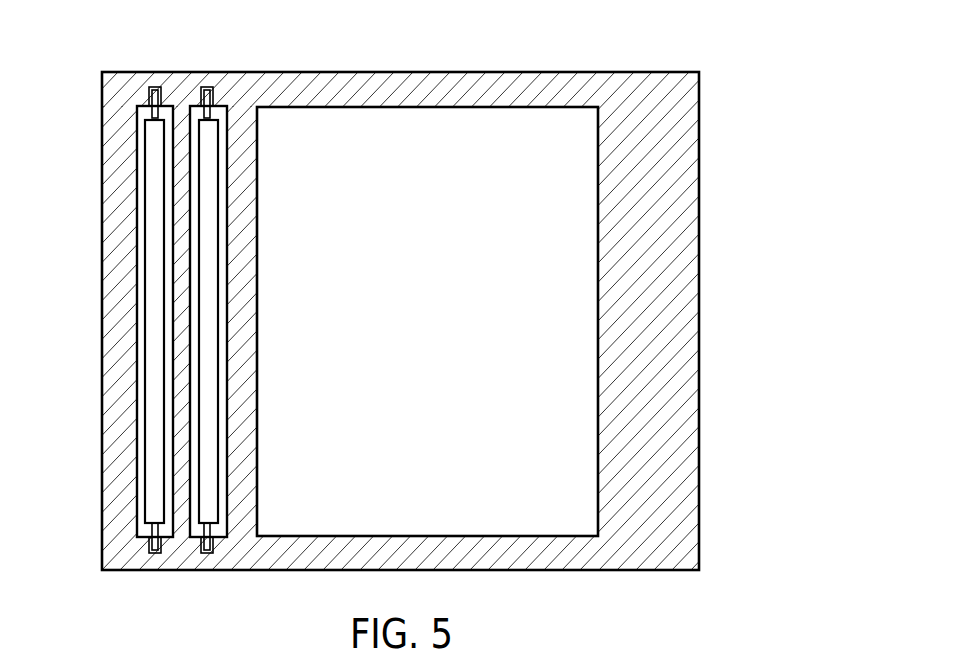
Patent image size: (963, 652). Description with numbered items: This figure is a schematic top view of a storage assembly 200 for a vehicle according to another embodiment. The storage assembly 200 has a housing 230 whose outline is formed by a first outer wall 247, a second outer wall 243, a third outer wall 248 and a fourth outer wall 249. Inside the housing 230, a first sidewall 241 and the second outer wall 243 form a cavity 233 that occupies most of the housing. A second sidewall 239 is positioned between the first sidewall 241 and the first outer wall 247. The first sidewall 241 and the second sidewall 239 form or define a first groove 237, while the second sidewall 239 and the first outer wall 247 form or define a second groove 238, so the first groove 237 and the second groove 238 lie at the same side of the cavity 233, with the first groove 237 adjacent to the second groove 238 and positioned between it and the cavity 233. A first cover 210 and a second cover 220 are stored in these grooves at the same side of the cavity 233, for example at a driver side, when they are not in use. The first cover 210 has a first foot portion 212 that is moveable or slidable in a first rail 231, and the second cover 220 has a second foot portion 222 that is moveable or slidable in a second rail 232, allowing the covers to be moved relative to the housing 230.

The storage assembly 200 is at (481, 334).
The first cover 210 is at (172, 321).
The first foot portion 212 is at (217, 533).
The second cover 220 is at (97, 321).
The second foot portion 222 is at (138, 530).
The housing 230 is at (704, 385).
The first rail 231 is at (217, 97).
The second rail 232 is at (147, 100).
The cavity 233 is at (463, 306).
The first groove 237 is at (228, 113).
The second groove 238 is at (140, 370).
The second sidewall 239 is at (181, 112).
The first sidewall 241 is at (242, 395).
The second outer wall 243 is at (648, 217).
The first outer wall 247 is at (123, 282).
The third outer wall 248 is at (393, 97).
The fourth outer wall 249 is at (505, 550).